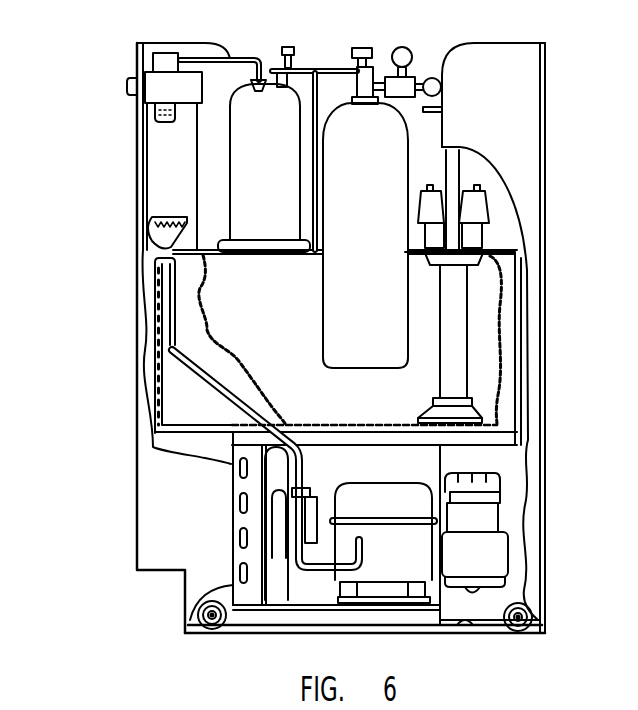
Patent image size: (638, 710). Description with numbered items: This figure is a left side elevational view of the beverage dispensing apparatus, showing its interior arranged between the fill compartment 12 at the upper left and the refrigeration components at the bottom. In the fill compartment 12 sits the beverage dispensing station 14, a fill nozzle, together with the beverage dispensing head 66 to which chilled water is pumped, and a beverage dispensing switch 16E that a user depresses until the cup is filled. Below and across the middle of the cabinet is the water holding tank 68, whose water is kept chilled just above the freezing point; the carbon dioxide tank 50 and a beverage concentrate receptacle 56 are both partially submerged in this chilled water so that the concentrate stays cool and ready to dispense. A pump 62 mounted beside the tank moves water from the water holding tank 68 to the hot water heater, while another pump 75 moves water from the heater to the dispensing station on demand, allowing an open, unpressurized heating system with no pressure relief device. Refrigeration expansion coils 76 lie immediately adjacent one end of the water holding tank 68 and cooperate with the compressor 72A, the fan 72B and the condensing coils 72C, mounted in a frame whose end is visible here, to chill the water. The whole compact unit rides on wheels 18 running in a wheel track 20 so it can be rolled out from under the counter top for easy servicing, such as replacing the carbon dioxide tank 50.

The fill compartment 12 is at (128, 158).
The beverage dispensing station 14 is at (160, 115).
The beverage dispensing switch 16E is at (128, 83).
The wheels 18 is at (160, 218).
The wheel track 20 is at (472, 633).
The carbon dioxide tank 50 is at (377, 115).
The beverage concentrate receptacle 56 is at (249, 90).
The pump 62 is at (470, 205).
The beverage dispensing head 66 is at (163, 80).
The water holding tank 68 is at (498, 297).
The compressor 72A is at (385, 560).
The fan 72B is at (272, 570).
The condensing coils 72C is at (232, 560).
The pump 75 is at (487, 553).
The refrigeration expansion coils 76 is at (158, 308).